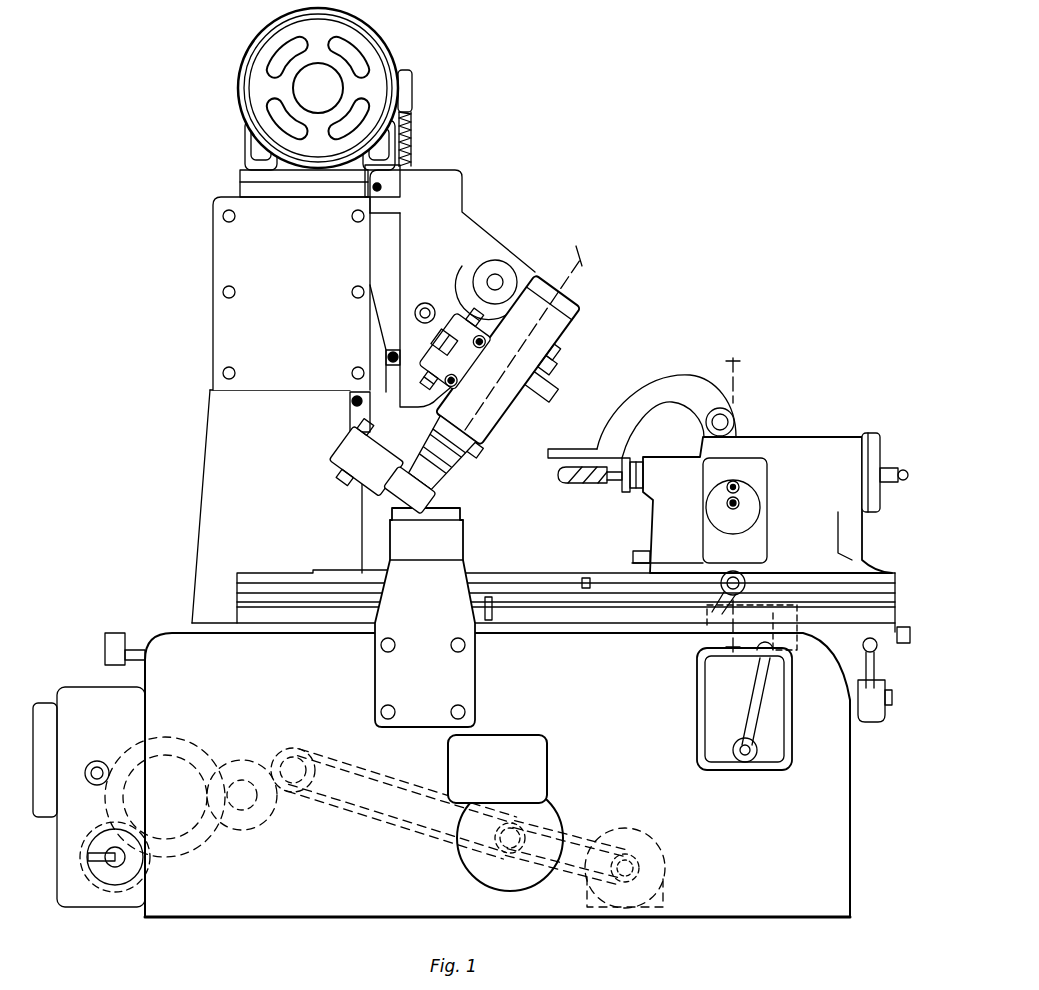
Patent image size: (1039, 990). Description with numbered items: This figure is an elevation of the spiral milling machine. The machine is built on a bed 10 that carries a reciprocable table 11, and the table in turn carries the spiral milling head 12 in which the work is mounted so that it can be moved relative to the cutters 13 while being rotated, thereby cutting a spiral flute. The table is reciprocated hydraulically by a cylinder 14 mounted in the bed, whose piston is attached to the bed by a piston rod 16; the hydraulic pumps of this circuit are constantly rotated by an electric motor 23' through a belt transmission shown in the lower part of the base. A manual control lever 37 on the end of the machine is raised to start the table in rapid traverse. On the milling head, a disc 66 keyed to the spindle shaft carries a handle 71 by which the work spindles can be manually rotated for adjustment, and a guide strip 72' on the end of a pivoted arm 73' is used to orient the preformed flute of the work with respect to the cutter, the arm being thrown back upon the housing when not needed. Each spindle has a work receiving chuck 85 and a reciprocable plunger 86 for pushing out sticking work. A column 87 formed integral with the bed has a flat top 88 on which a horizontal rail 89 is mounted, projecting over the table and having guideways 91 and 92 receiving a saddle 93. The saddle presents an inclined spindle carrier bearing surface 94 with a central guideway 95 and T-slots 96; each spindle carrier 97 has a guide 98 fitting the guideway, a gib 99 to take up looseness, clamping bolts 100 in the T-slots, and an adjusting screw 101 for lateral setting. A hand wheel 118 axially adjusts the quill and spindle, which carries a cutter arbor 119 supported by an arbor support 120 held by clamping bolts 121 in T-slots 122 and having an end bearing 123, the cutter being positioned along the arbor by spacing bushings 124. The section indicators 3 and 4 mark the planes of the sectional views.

The bed 10 is at (441, 775).
The table 11 is at (245, 594).
The spiral milling head 12 is at (788, 440).
The cutter 13 is at (437, 601).
The cylinder 14 is at (116, 632).
The piston rod 16 is at (845, 640).
The electric motor 23' is at (642, 866).
The manual control lever 37 is at (858, 680).
The disc 66 is at (760, 503).
The handle 71 is at (740, 487).
The guide strip 72' is at (572, 482).
The pivoted arm 73' is at (642, 408).
The work receiving chuck 85 is at (626, 456).
The reciprocable plunger 86 is at (900, 466).
The column 87 is at (206, 474).
The flat top 88 is at (228, 395).
The horizontal rail 89 is at (213, 262).
The guideway 91 is at (398, 172).
The guideway 92 is at (350, 394).
The saddle 93 is at (450, 204).
The spindle carrier bearing surface 94 is at (470, 258).
The central guideway 95 is at (418, 338).
The T-slots 96 is at (405, 330).
The spindle carrier 97 is at (543, 377).
The guide 98 is at (470, 361).
The gib 99 is at (399, 352).
The clamping bolts 100 is at (560, 415).
The adjusting screw 101 is at (500, 353).
The operating hand wheel 118 is at (570, 392).
The cutter arbor 119 is at (362, 25).
The arbor support 120 is at (349, 462).
The clamping bolts 121 is at (332, 480).
The T-slots 122 is at (342, 435).
The bearing 123 is at (375, 500).
The spacing bushings 124 is at (470, 477).
The section line 3 is at (723, 365).
The section line 4 is at (569, 255).